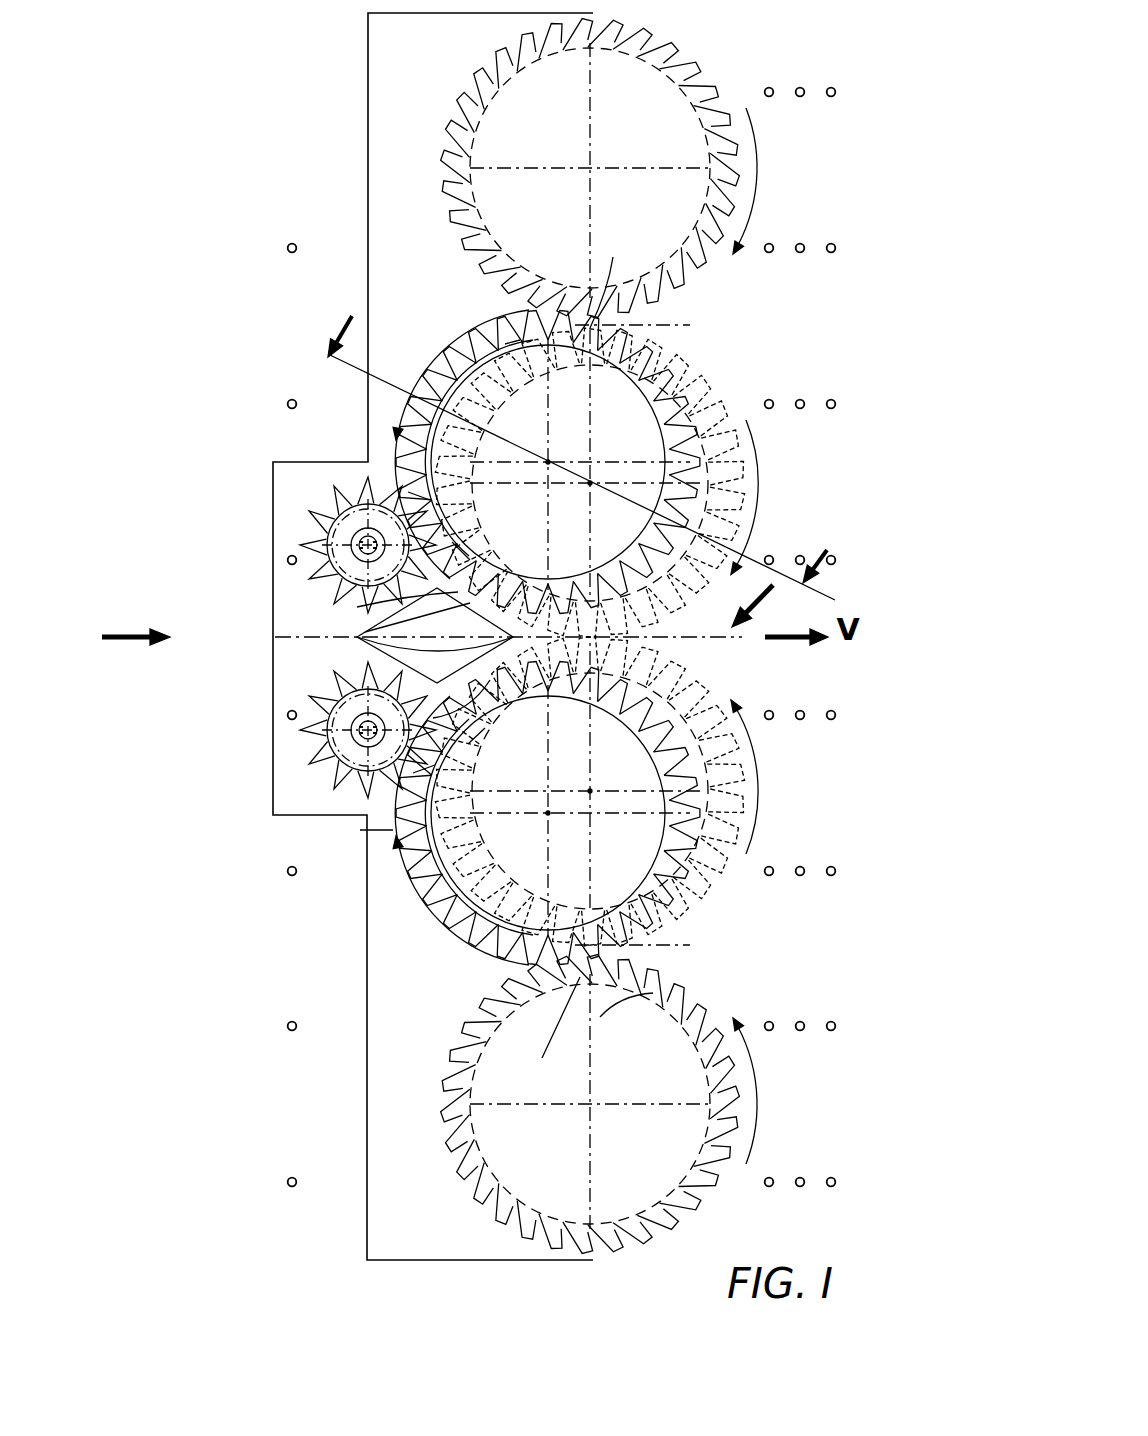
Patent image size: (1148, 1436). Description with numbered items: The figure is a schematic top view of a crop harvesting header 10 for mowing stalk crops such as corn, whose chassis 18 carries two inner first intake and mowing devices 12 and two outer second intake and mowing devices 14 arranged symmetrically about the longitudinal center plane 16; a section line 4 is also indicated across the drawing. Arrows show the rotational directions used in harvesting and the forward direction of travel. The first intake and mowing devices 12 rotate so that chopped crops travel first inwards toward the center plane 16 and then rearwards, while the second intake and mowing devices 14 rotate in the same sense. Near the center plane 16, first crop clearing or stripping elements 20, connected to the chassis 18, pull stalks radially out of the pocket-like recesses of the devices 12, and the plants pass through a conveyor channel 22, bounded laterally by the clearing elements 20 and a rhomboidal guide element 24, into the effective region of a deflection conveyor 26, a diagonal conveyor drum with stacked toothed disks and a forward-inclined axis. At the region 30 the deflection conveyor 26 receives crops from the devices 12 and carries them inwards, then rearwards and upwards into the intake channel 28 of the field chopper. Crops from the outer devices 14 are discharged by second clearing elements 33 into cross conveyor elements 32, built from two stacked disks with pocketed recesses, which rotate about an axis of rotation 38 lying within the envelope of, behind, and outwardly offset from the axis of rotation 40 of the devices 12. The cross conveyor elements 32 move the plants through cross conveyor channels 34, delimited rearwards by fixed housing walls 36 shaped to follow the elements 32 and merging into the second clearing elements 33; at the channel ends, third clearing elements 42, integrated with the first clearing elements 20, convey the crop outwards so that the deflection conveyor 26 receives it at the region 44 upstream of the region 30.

The section line 4- 4 is at (579, 444).
The crop harvesting header 10 is at (421, 636).
The first intake and mowing devices 12 is at (620, 638).
The second intake and mowing devices 14 is at (733, 127).
The longitudinal center plane 16 is at (688, 636).
The chassis 18 is at (395, 1073).
The first crop clearing or stripping elements 20 is at (590, 578).
The conveyor channel 22 is at (300, 637).
The rhomboidal guide element 24 is at (400, 645).
The deflection conveyor 26 is at (327, 494).
The intake channel 28 is at (132, 650).
The region 30 is at (357, 607).
The cross conveyor elements 32 is at (512, 344).
The second crop clearing or stripping elements 33 is at (586, 651).
The cross conveyor channels 34 is at (477, 345).
The fixed housing walls 36 is at (483, 346).
The axis of rotation 38 is at (548, 462).
The axis of rotation 40 is at (590, 483).
The third crop clearing or stripping elements 42 is at (452, 542).
The region 44 is at (408, 492).